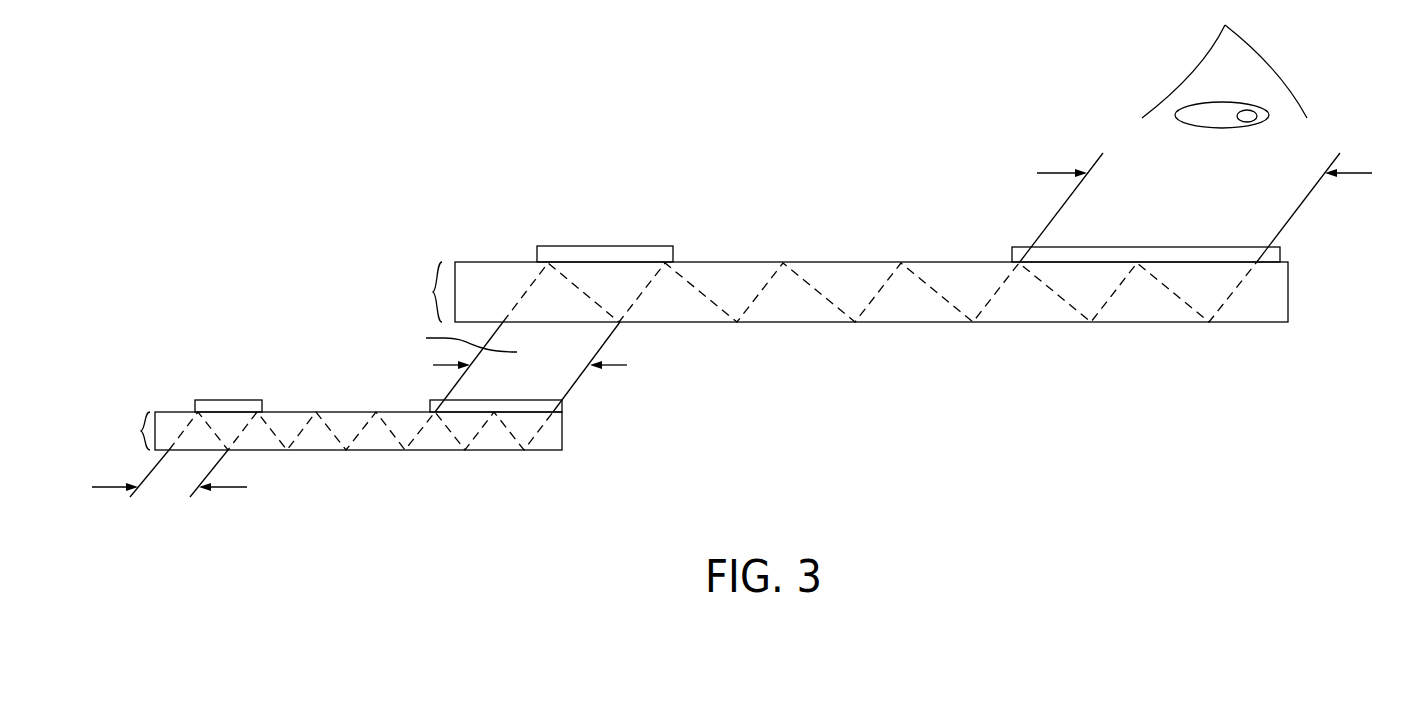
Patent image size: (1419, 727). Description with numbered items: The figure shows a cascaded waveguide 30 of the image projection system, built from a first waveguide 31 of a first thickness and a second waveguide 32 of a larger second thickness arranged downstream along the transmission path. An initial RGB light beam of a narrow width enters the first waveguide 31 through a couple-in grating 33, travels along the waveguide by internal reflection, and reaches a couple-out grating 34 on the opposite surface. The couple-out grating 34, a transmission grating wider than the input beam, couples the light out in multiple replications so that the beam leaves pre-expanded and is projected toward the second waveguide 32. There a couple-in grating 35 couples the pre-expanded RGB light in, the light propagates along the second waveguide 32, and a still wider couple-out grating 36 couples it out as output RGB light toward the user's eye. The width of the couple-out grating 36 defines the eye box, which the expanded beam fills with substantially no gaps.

The cascaded waveguide 30 is at (404, 158).
The first waveguide 31 is at (562, 432).
The second waveguide 32 is at (1288, 293).
The couple-in grating 33 is at (225, 400).
The couple-out grating 34 is at (562, 404).
The couple-in grating 35 is at (588, 246).
The couple-out grating 36 is at (1018, 247).